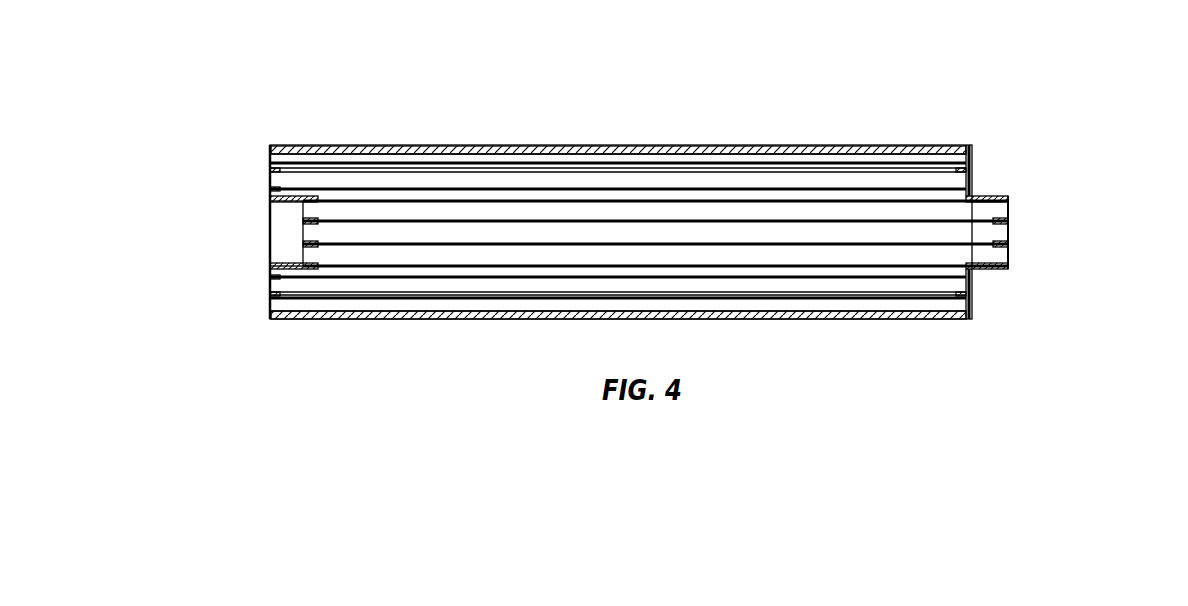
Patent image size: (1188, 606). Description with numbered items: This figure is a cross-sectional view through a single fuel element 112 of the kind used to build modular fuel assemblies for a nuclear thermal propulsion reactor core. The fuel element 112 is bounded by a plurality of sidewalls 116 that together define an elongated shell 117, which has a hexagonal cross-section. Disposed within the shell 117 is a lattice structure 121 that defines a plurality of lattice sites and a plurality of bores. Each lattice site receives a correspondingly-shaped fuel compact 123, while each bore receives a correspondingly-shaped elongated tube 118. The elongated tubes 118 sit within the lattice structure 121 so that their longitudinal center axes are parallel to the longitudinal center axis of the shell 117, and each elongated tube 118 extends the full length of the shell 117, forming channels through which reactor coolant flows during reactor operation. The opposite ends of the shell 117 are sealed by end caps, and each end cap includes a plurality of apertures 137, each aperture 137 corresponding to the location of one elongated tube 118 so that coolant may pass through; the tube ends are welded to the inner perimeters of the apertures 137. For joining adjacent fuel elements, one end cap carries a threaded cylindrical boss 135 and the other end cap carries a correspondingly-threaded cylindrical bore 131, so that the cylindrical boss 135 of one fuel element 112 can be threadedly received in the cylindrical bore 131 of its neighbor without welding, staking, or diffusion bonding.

The fuel element 112 is at (728, 117).
The sidewall 116 is at (545, 146).
The shell 117 is at (794, 332).
The elongated tube 118 is at (270, 178).
The lattice structure 121 is at (394, 193).
The fuel compact 123 is at (428, 272).
The cylindrical bore 131 is at (261, 235).
The cylindrical boss 135 is at (987, 285).
The aperture 137 is at (984, 177).